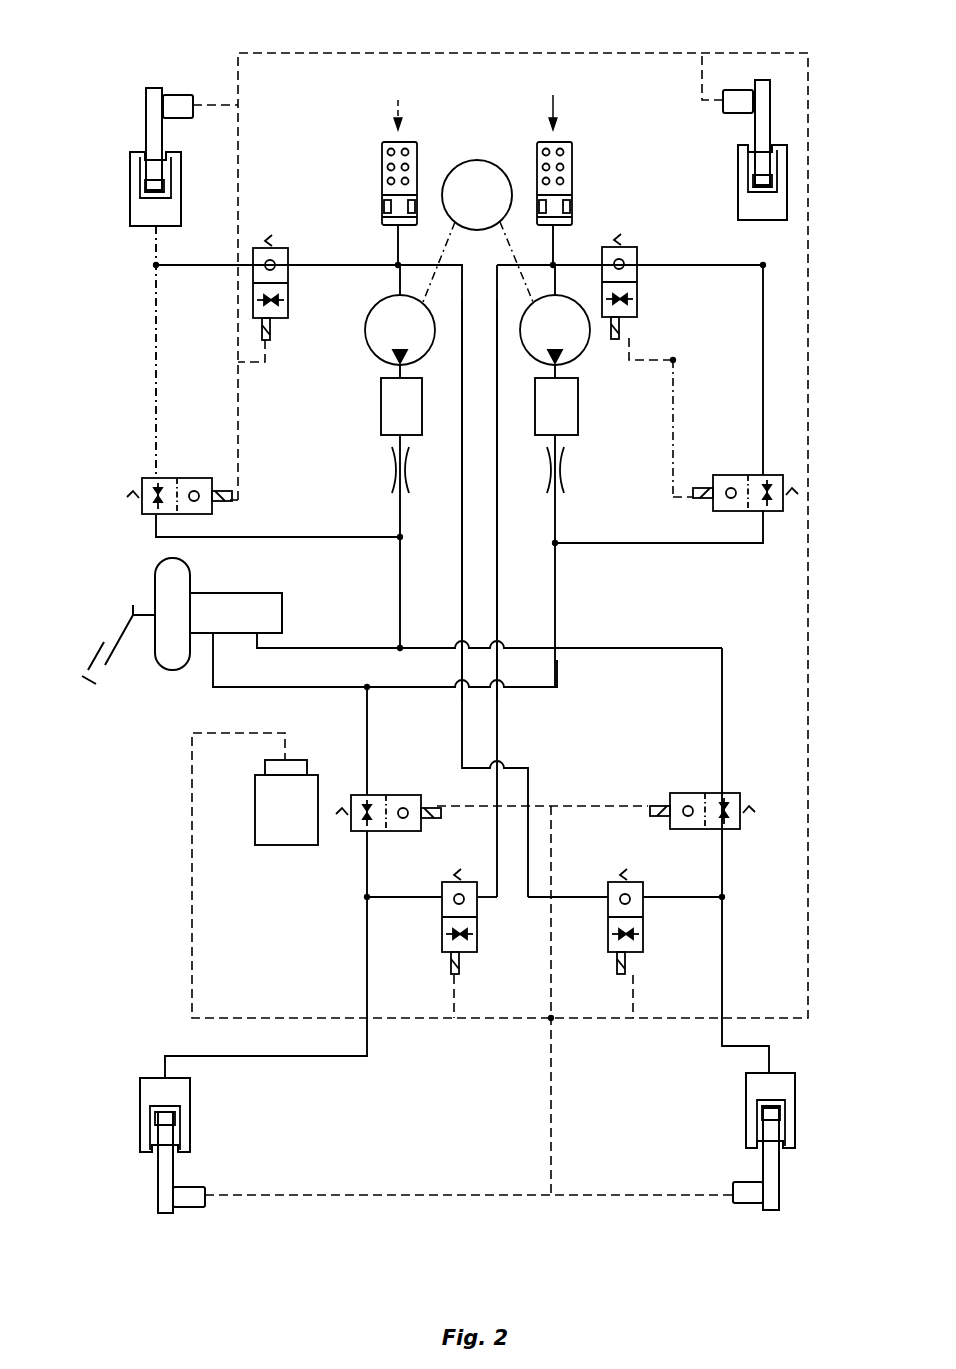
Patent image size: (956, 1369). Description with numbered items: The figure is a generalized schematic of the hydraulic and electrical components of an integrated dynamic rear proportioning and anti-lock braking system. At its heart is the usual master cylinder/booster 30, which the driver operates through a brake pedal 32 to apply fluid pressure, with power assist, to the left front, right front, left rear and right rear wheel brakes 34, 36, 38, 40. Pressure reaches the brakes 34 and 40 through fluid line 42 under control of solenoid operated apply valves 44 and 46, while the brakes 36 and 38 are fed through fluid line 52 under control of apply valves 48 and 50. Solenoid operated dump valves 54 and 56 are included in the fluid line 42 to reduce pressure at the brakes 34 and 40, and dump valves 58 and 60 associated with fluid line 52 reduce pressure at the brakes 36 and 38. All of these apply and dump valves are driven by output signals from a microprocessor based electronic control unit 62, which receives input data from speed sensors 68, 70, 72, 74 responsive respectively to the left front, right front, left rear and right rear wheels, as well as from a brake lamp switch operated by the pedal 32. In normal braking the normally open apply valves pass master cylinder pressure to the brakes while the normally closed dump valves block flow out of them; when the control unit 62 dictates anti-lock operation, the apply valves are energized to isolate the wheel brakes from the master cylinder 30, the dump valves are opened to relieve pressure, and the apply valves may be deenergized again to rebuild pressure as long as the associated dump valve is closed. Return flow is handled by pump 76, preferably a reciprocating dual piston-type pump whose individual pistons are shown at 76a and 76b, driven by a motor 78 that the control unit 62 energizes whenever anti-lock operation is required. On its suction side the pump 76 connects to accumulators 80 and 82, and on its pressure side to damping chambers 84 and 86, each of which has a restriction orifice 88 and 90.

The master cylinder/booster 30 is at (210, 600).
The brake pedal 32 is at (105, 667).
The left front wheel brake 34 is at (130, 210).
The right front wheel brake 36 is at (775, 200).
The left rear wheel brake 38 is at (190, 1090).
The right rear wheel brake 40 is at (748, 1085).
The fluid line 42 is at (318, 648).
The solenoid operated apply valve 44 is at (180, 478).
The solenoid operated apply valve 46 is at (740, 793).
The solenoid operated apply valve 48 is at (748, 475).
The solenoid operated apply valve 50 is at (388, 795).
The fluid line 52 is at (341, 687).
The solenoid operated dump valve 54 is at (288, 300).
The solenoid operated dump valve 56 is at (643, 946).
The solenoid operated dump valve 58 is at (625, 247).
The solenoid operated dump valve 60 is at (478, 946).
The electronic control unit 62 is at (290, 845).
The speed sensor 68 is at (170, 95).
The speed sensor 70 is at (748, 92).
The speed sensor 72 is at (205, 1200).
The speed sensor 74 is at (733, 1195).
The pump 76 is at (491, 334).
The pump piston 76a is at (368, 342).
The pump piston 76b is at (585, 350).
The motor 78 is at (478, 160).
The accumulator 80 is at (382, 166).
The accumulator 82 is at (572, 158).
The damping chamber 84 is at (381, 408).
The damping chamber 86 is at (578, 427).
The restriction orifice 88 is at (392, 470).
The restriction orifice 90 is at (564, 470).